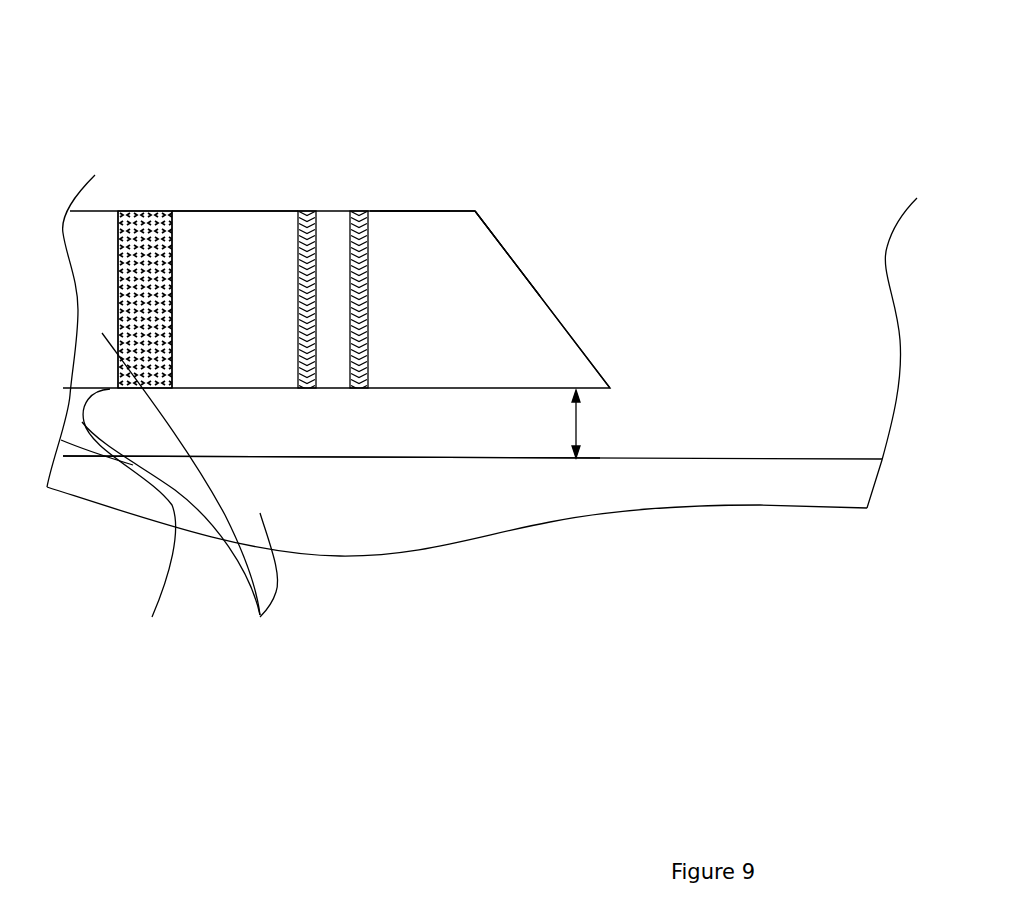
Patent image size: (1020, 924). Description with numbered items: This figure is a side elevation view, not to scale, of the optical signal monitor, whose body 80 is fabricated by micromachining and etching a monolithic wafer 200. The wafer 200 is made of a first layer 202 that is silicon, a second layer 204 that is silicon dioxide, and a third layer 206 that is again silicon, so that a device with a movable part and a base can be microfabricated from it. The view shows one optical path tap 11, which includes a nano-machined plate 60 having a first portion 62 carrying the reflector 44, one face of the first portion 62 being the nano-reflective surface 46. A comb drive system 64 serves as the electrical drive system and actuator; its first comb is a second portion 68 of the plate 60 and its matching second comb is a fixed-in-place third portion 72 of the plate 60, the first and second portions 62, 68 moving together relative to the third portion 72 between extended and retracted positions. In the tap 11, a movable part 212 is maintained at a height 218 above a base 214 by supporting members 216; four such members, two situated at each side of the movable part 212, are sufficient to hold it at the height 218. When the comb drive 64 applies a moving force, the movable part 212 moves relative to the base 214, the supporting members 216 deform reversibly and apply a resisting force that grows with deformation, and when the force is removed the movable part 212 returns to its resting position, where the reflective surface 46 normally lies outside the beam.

The optical path tap 11 is at (760, 230).
The reflector 44 is at (445, 211).
The nano-reflective surface 46 is at (492, 230).
The nano-machined plate 60 is at (600, 205).
The first portion 62 is at (405, 170).
The comb drive system 64 is at (152, 300).
The second portion 68 is at (211, 152).
The third portion 72 is at (99, 150).
The body 80 is at (417, 550).
The monolithic wafer 200 is at (594, 540).
The first layer 202 is at (102, 297).
The second layer 204 is at (129, 519).
The third layer 206 is at (540, 498).
The movable part 212 is at (468, 300).
The base 214 is at (169, 491).
The supporting members 216 is at (367, 211).
The height 218 is at (577, 427).